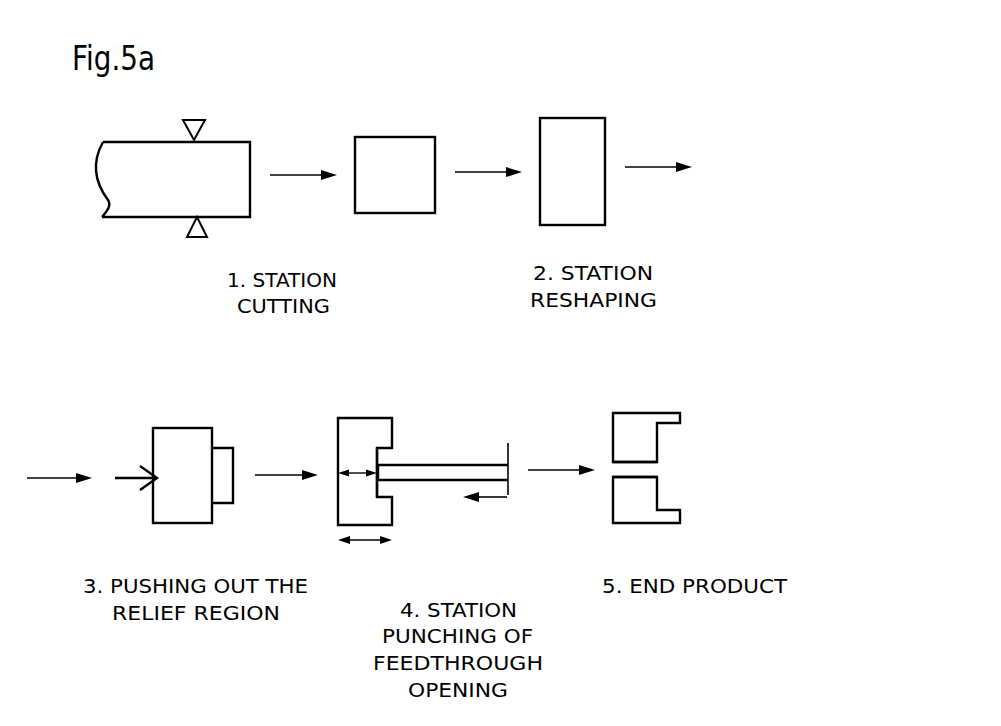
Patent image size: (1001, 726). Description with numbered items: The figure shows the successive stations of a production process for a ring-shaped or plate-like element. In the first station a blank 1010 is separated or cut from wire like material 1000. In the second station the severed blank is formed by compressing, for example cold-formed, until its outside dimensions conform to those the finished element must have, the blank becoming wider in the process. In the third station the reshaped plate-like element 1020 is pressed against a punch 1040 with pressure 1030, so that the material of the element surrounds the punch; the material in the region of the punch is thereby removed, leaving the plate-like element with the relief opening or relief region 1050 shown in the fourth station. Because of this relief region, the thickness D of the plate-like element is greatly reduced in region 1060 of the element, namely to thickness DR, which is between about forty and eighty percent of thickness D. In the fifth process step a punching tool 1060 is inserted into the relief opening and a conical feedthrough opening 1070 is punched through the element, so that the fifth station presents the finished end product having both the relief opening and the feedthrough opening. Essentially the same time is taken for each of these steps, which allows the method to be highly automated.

The wire like material 1000 is at (136, 200).
The blank 1010 is at (398, 193).
The reshaped plate-like element 1020 is at (580, 132).
The pressure 1030 is at (128, 482).
The punch 1040 is at (223, 455).
The relief region 1050 is at (378, 483).
The punching tool 1060 is at (453, 473).
The conical feedthrough opening 1070 is at (625, 468).
The reduced thickness DR is at (355, 467).
The thickness D is at (360, 543).